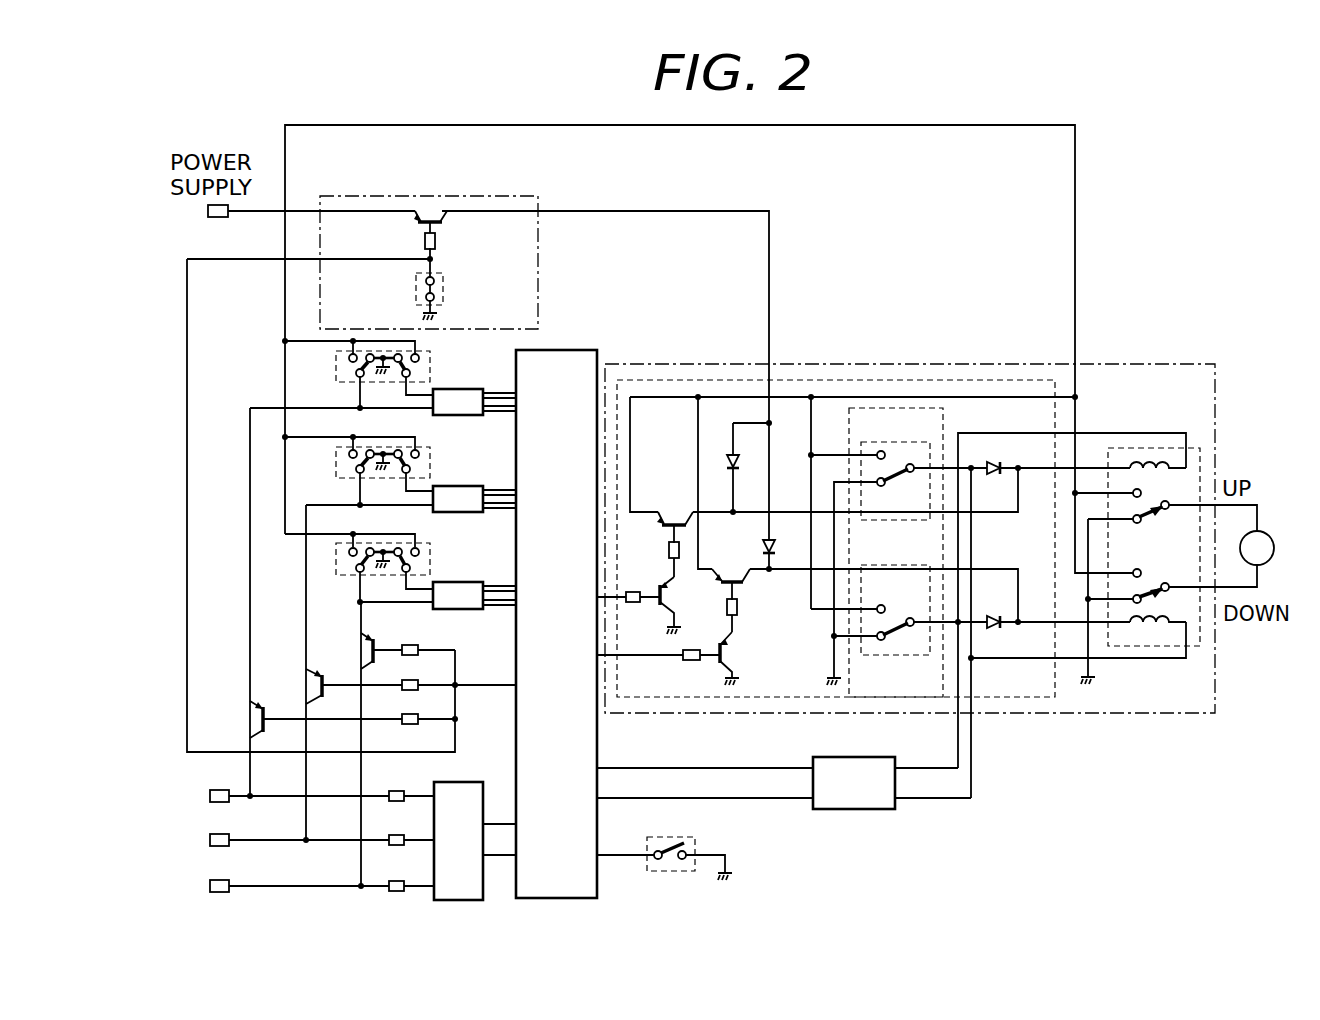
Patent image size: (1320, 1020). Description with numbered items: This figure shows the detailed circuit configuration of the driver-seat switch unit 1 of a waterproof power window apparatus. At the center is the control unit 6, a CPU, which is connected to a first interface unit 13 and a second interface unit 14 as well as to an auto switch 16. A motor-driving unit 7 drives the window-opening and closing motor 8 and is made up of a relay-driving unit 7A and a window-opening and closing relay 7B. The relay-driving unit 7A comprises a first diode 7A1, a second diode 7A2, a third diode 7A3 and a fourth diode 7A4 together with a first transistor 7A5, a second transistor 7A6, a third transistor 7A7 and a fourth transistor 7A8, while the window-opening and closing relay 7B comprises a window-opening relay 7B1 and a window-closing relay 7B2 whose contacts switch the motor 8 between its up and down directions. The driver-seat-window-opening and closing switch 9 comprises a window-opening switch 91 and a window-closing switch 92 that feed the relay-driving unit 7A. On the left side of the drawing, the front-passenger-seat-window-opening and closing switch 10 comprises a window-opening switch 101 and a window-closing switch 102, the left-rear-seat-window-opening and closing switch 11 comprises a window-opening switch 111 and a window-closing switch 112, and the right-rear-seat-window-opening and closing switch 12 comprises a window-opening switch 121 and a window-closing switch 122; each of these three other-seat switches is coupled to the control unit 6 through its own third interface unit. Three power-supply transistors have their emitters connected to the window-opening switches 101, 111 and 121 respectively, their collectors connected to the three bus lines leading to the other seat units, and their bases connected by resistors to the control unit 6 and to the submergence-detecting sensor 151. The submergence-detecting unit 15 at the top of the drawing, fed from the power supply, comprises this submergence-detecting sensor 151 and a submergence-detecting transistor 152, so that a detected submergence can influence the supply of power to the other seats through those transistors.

The driver-seat switch unit 1 is at (960, 110).
The control unit 6 is at (598, 355).
The motor-driving unit 7 is at (1140, 362).
The relay-driving unit 7A is at (1055, 385).
The first diode 7A1 is at (998, 628).
The second diode 7A2 is at (998, 466).
The third diode 7A3 is at (762, 548).
The fourth diode 7A4 is at (713, 466).
The first transistor 7A5 is at (727, 584).
The second transistor 7A6 is at (728, 653).
The third transistor 7A7 is at (672, 513).
The fourth transistor 7A8 is at (660, 599).
The window-opening and closing relay 7B is at (1172, 650).
The window-opening relay 7B1 is at (1172, 569).
The window-closing relay 7B2 is at (1148, 524).
The window-opening and closing motor 8 is at (1270, 533).
The driver-seat-window-opening and closing switch 9 is at (943, 420).
The window-opening switch 91 is at (898, 642).
The window-closing switch 92 is at (898, 490).
The front-passenger-seat-window-opening and closing switch 10 is at (382, 374).
The window-opening switch 101 is at (356, 375).
The window-closing switch 102 is at (410, 371).
The left-rear-seat-window-opening and closing switch 11 is at (382, 470).
The window-opening switch 111 is at (356, 471).
The window-closing switch 112 is at (410, 467).
The right-rear-seat-window-opening and closing switch 12 is at (376, 567).
The window-opening switch 121 is at (356, 566).
The window-closing switch 122 is at (410, 566).
The first interface unit 13 is at (868, 757).
The second interface unit 14 is at (460, 782).
The submergence-detecting unit 15 is at (522, 197).
The submergence-detecting sensor 151 is at (443, 297).
The submergence-detecting transistor 152 is at (437, 224).
The auto switch 16 is at (683, 836).